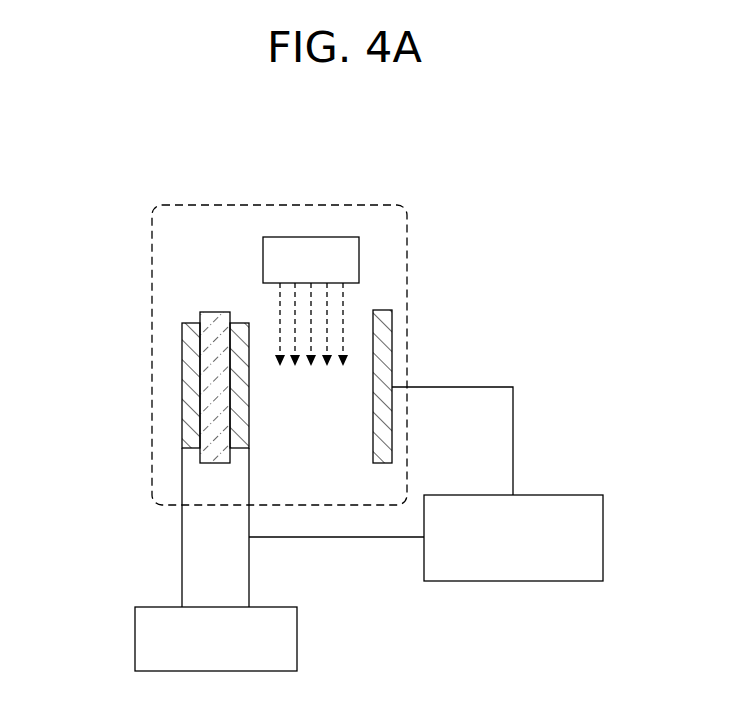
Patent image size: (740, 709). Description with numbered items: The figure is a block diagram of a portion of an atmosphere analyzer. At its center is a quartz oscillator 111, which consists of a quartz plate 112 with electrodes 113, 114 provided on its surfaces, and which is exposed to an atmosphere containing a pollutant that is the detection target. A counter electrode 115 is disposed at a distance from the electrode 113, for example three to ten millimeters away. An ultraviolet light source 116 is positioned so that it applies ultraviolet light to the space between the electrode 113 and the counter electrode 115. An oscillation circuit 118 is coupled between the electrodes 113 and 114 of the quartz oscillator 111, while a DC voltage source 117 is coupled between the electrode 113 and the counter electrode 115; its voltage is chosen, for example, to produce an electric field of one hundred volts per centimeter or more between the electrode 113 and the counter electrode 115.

The quartz oscillator 111 is at (77, 255).
The quartz plate 112 is at (221, 311).
The electrode 113 is at (182, 352).
The electrode 114 is at (240, 323).
The counter electrode 115 is at (392, 328).
The ultraviolet light source 116 is at (359, 264).
The DC voltage source 117 is at (604, 515).
The oscillation circuit 118 is at (298, 652).